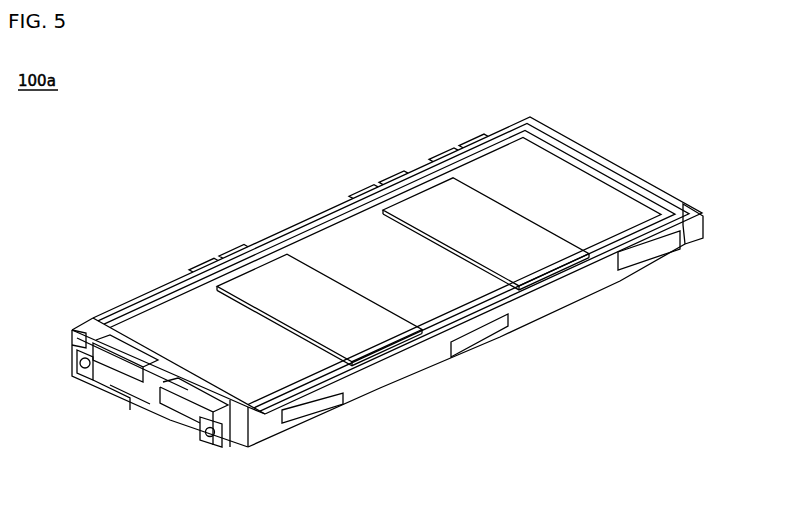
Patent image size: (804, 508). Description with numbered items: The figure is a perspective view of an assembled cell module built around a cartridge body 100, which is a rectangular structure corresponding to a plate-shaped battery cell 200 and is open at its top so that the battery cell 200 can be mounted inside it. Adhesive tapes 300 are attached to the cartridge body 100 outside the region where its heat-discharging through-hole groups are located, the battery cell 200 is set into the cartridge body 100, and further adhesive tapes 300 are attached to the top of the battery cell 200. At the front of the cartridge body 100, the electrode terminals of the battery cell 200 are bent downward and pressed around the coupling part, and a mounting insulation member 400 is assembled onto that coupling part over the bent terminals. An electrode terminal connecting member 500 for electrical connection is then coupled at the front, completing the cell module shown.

The cartridge body 100 is at (578, 287).
The battery cell 200 is at (505, 170).
The adhesive tape 300 is at (268, 282).
The mounting insulation member 400 is at (96, 325).
The electrode terminal connecting member 500 is at (140, 398).